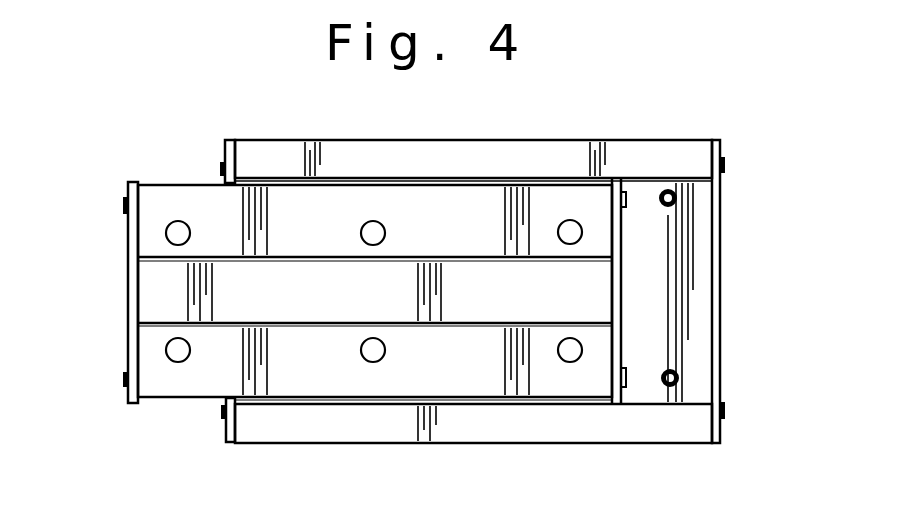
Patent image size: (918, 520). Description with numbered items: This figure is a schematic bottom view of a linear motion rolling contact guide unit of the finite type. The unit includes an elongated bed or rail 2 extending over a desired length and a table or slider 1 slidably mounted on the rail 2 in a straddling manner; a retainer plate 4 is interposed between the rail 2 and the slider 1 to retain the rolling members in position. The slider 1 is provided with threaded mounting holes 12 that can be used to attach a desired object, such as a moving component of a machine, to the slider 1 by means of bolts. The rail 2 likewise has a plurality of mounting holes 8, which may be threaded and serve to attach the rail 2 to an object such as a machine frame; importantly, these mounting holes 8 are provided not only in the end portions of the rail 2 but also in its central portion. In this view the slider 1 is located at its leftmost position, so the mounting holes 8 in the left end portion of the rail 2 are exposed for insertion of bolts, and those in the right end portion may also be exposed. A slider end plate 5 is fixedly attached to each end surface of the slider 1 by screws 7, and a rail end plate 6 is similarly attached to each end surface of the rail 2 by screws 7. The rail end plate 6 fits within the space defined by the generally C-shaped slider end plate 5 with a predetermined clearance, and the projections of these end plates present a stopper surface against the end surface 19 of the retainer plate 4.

The slider 1 is at (666, 158).
The rail 2 is at (148, 292).
The retainer plate 4 is at (485, 180).
The slider end plate 5 is at (224, 155).
The rail end plate 6 is at (128, 242).
The screws 7 is at (724, 168).
The mounting holes 8 is at (178, 363).
The mounting holes 12 is at (679, 378).
The end surface 19 is at (240, 180).